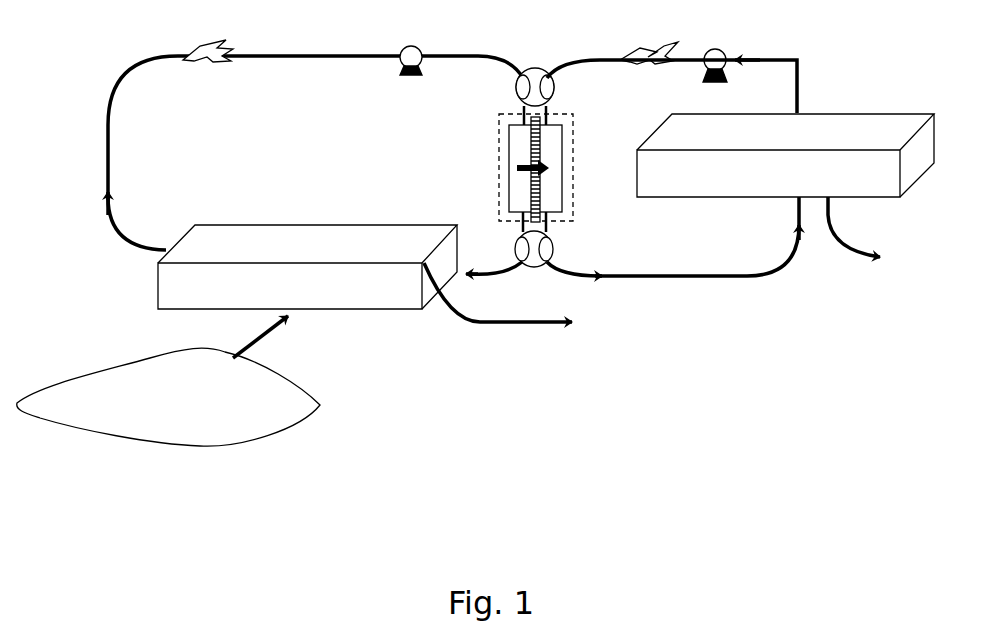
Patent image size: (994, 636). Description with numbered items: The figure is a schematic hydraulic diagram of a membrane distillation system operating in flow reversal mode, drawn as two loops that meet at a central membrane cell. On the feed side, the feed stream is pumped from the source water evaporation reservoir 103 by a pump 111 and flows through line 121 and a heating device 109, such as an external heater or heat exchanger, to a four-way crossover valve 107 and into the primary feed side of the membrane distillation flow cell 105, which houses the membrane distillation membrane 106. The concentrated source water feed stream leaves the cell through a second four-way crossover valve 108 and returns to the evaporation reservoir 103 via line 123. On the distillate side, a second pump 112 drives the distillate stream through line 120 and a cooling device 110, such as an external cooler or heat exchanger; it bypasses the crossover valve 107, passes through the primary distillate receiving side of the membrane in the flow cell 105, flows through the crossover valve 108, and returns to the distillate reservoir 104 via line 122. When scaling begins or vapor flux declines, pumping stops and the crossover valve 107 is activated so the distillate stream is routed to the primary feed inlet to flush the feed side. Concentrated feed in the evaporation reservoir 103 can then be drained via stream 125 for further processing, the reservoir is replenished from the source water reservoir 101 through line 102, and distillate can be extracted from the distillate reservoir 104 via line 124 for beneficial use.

The source water reservoir 101 is at (112, 361).
The line 102 is at (275, 334).
The evaporation reservoir 103 is at (300, 222).
The distillate reservoir 104 is at (877, 113).
The membrane distillation flow cell 105 is at (574, 112).
The membrane distillation membrane 106 is at (542, 152).
The 4-way crossover valve 107 is at (532, 68).
The 4-way crossover valve 108 is at (522, 243).
The heating device 109 is at (216, 63).
The cooling device 110 is at (658, 45).
The pump 111 is at (402, 50).
The pump 112 is at (727, 53).
The line 120 is at (790, 81).
The line 121 is at (110, 165).
The line 122 is at (637, 280).
The line 123 is at (488, 277).
The line 124 is at (834, 214).
The stream 125 is at (536, 324).